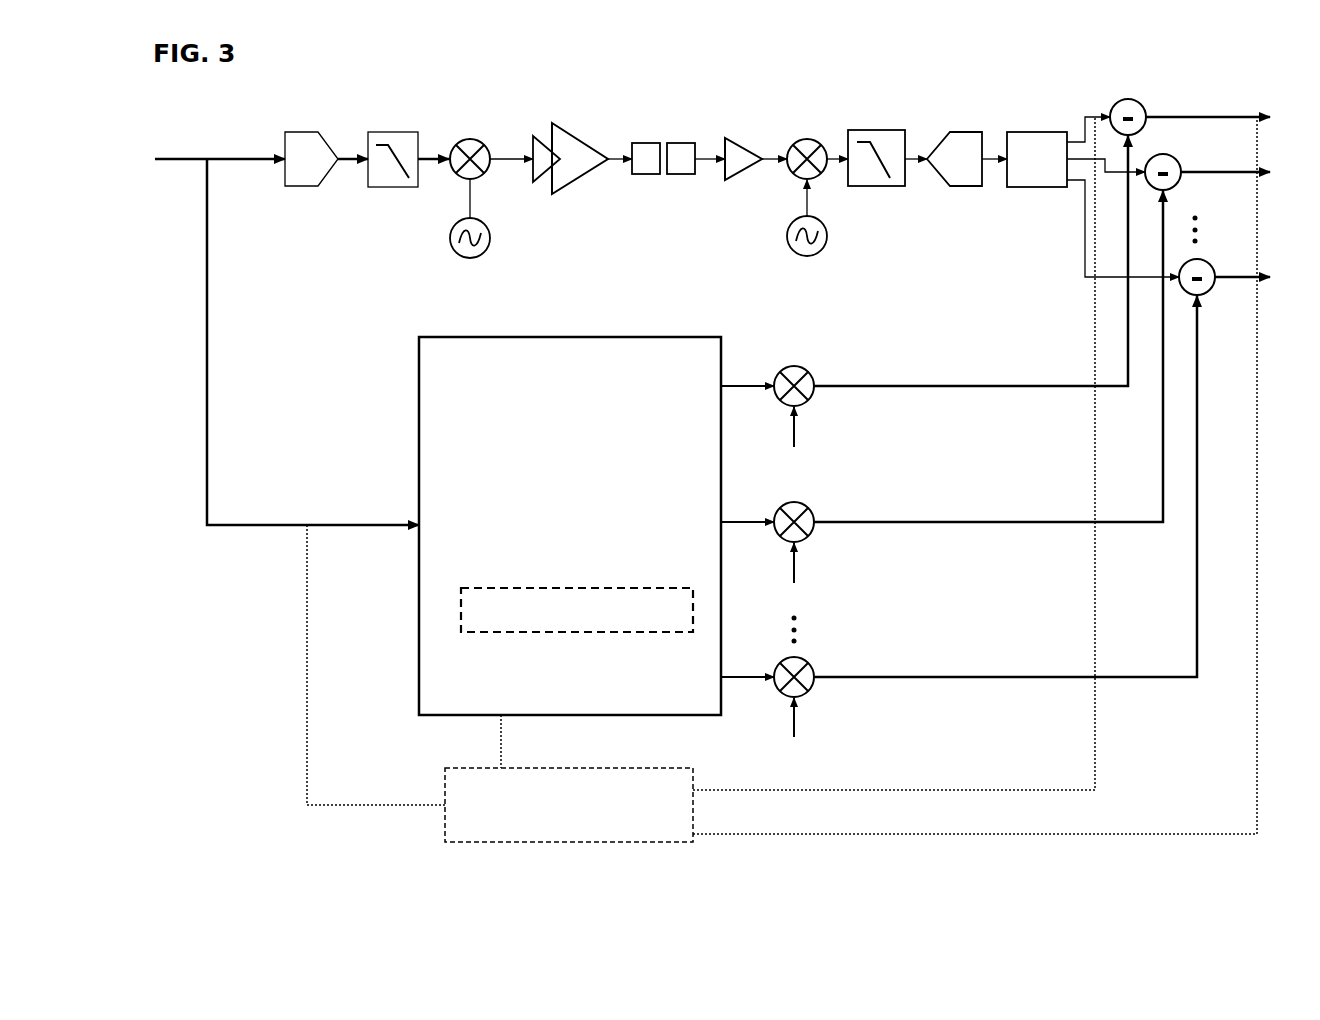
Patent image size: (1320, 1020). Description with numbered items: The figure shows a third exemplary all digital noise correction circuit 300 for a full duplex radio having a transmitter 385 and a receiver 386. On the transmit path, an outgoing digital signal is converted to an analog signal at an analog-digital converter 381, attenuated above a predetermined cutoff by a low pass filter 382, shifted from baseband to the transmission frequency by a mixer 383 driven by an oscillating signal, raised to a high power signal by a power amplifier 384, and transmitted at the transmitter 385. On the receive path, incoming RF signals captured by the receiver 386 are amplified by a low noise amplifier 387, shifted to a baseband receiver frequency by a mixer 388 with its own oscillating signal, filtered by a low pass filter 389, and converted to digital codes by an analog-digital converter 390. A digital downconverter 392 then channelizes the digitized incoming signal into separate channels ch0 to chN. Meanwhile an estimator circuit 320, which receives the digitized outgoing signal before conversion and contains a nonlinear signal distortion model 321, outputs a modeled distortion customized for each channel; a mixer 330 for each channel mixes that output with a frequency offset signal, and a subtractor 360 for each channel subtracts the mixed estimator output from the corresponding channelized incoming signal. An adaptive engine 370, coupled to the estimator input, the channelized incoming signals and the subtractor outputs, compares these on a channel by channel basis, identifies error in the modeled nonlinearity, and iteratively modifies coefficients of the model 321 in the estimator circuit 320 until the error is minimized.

The all digital noise correction circuit 300 is at (178, 88).
The analog-digital converter 381 is at (310, 140).
The low pass filter 382 is at (404, 138).
The mixer 383 is at (470, 142).
The power amplifier 384 is at (577, 146).
The transmitter 385 is at (650, 176).
The receiver 386 is at (681, 142).
The amplifier 387 is at (741, 148).
The mixer 388 is at (811, 144).
The low pass filter 389 is at (904, 138).
The analog-digital converter 390 is at (975, 135).
The digital downconverter 392 is at (1023, 180).
The subtractor 360 is at (1127, 104).
The mixer 330 is at (800, 372).
The estimator circuit 320 is at (570, 526).
The nonlinear signal distortion model 321 is at (577, 610).
The adaptive engine 370 is at (782, 479).